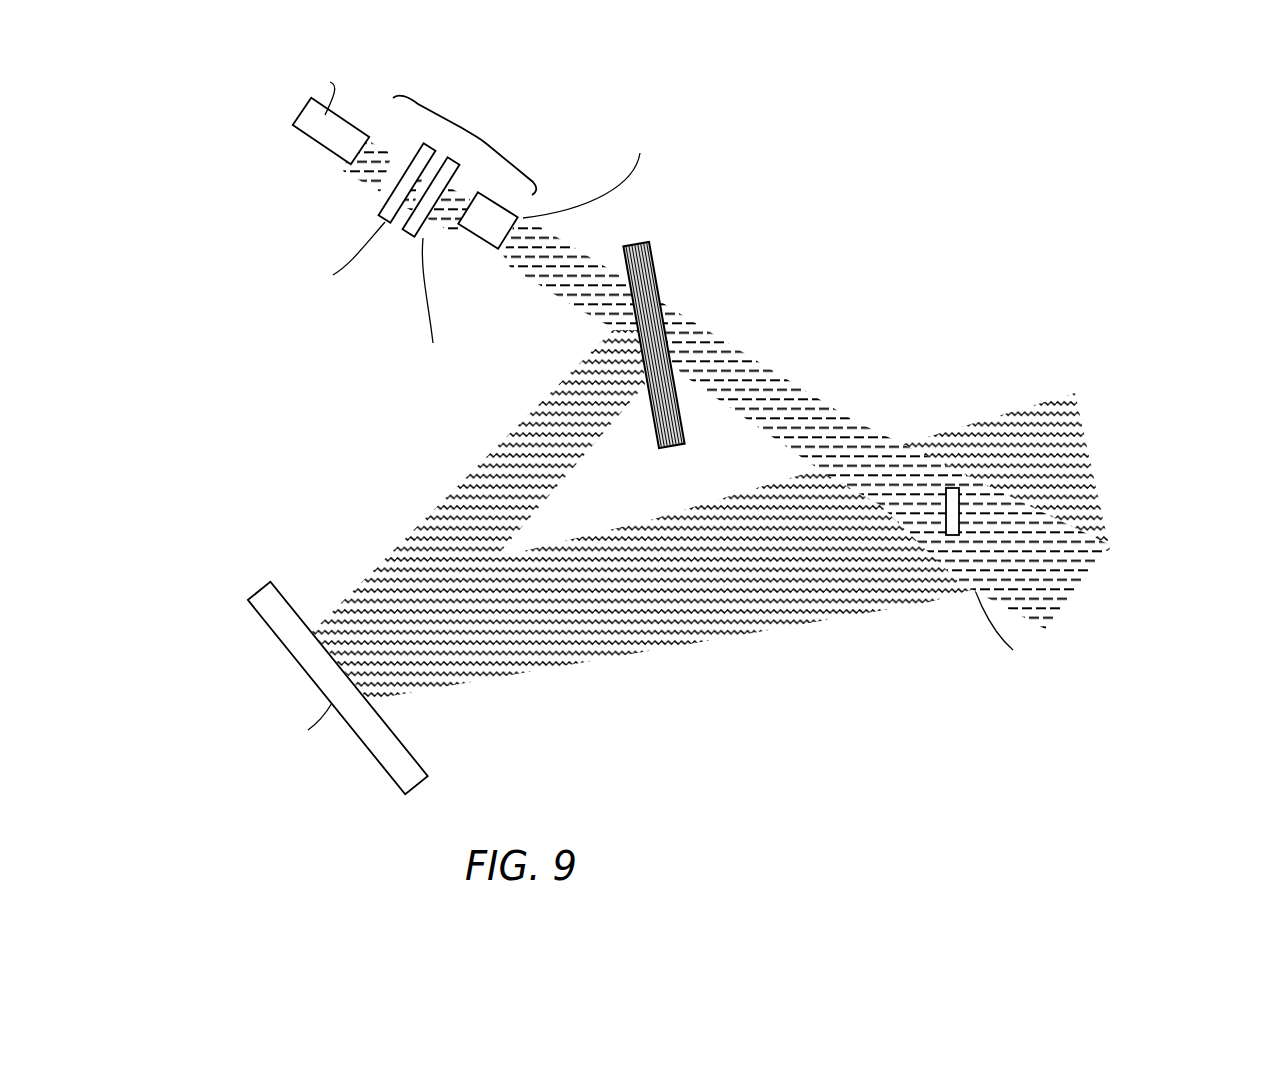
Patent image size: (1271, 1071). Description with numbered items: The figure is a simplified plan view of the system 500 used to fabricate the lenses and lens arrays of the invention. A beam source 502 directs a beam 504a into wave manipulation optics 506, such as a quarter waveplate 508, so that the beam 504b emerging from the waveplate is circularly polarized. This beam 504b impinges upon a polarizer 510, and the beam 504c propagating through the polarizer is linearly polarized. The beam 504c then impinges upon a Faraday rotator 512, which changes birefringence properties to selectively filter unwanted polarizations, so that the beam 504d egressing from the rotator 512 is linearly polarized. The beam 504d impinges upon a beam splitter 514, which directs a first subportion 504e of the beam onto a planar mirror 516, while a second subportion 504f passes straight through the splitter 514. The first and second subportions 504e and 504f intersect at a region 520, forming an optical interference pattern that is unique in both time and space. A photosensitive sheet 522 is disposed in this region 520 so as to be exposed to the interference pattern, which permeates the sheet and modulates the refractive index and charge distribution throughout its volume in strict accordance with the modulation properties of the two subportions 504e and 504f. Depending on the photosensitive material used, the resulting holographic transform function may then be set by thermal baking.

The system 500 is at (942, 199).
The beam source 502 is at (303, 140).
The beam 504a is at (362, 191).
The beam 504b is at (397, 234).
The beam 504c is at (443, 227).
The beam 504d is at (510, 271).
The first subportion 504e is at (658, 517).
The second subportion 504f is at (736, 323).
The wave manipulation optics 506 is at (477, 137).
The ¼ waveplate 508 is at (397, 217).
The polarizer 510 is at (413, 237).
The Faraday rotator 512 is at (517, 218).
The beam splitter 514 is at (643, 243).
The planar mirror 516 is at (257, 585).
The region 520 is at (963, 401).
The photosensitive sheet 522 is at (950, 537).